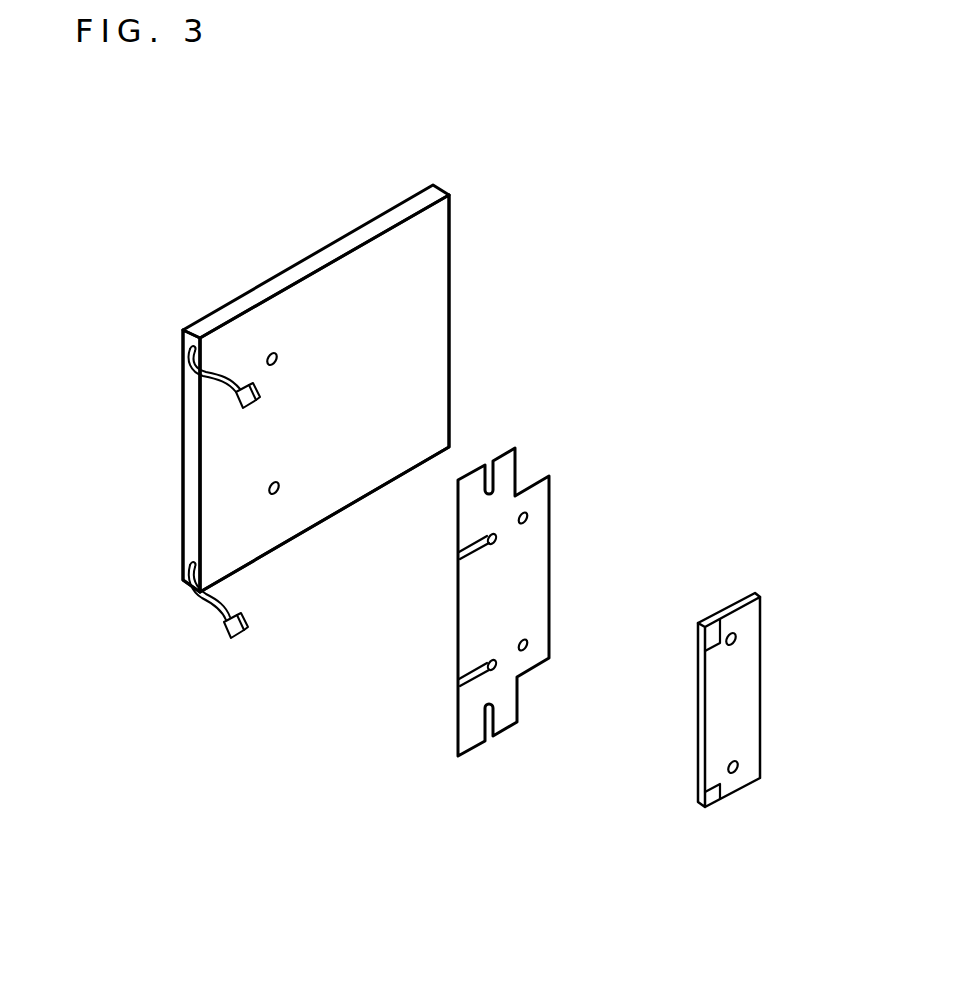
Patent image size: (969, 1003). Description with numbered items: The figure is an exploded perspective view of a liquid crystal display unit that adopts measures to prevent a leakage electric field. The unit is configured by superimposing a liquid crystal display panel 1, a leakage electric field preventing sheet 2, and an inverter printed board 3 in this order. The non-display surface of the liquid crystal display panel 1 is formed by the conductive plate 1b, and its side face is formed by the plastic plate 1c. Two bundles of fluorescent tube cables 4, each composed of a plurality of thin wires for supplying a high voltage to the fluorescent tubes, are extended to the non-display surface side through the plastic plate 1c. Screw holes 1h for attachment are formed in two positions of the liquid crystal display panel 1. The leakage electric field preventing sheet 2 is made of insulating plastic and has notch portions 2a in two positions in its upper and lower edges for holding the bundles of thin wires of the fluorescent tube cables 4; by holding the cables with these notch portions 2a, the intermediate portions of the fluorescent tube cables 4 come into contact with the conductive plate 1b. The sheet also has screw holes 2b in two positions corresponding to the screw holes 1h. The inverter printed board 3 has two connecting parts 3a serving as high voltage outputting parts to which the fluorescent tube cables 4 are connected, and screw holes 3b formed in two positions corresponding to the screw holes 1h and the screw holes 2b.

The liquid crystal display panel 1 is at (273, 274).
The conductive plate 1b is at (415, 328).
The plastic plate 1c is at (192, 478).
The screw holes 1h is at (269, 352).
The fluorescent tube cables 4 is at (215, 388).
The leakage electric field preventing sheet 2 is at (507, 446).
The notch portions 2a is at (485, 545).
The screw holes 2b is at (529, 518).
The inverter printed board 3 is at (766, 619).
The connecting parts 3a is at (704, 632).
The screw holes 3b is at (733, 633).